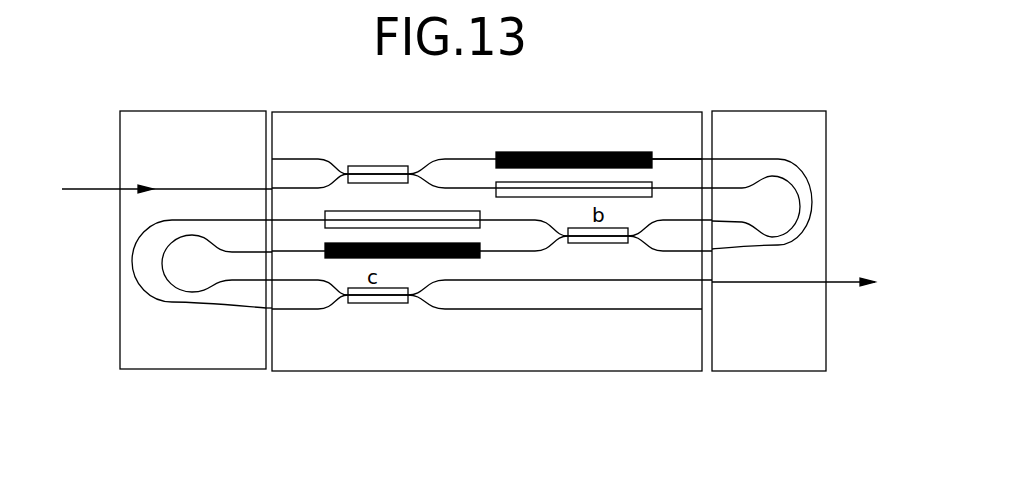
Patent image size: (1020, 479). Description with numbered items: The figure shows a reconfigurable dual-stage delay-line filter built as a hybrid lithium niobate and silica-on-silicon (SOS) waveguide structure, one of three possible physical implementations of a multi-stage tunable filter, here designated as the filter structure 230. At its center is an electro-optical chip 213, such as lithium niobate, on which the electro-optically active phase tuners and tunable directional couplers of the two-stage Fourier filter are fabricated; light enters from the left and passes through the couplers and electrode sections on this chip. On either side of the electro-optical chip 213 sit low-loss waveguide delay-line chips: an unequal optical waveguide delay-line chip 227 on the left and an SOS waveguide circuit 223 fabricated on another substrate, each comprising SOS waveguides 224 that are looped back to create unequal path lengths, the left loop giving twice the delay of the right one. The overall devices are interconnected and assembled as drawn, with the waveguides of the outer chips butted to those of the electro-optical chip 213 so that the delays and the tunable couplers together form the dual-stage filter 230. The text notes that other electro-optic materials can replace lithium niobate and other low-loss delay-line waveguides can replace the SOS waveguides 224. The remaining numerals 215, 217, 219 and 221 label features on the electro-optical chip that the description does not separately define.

The electro-optical chip 213 is at (363, 371).
The electrode 215 is at (540, 152).
The directional coupler 217 is at (392, 165).
The optical waveguide 219 is at (300, 158).
The LiNbO3 substrate waveguide 221 is at (674, 150).
The SOS waveguide circuit 223 is at (238, 308).
The SOS waveguides 224 is at (150, 287).
The unequal optical waveguide delay-line chip 227 is at (192, 370).
The hybrid LiNbO3/low-loss integrated waveguide delay-line reconfigurable filter str 230 is at (734, 412).